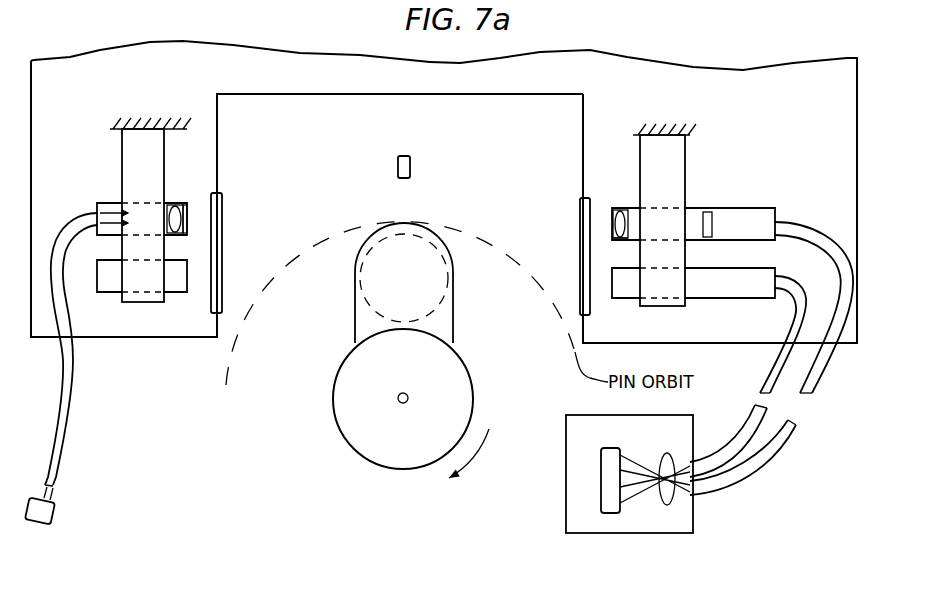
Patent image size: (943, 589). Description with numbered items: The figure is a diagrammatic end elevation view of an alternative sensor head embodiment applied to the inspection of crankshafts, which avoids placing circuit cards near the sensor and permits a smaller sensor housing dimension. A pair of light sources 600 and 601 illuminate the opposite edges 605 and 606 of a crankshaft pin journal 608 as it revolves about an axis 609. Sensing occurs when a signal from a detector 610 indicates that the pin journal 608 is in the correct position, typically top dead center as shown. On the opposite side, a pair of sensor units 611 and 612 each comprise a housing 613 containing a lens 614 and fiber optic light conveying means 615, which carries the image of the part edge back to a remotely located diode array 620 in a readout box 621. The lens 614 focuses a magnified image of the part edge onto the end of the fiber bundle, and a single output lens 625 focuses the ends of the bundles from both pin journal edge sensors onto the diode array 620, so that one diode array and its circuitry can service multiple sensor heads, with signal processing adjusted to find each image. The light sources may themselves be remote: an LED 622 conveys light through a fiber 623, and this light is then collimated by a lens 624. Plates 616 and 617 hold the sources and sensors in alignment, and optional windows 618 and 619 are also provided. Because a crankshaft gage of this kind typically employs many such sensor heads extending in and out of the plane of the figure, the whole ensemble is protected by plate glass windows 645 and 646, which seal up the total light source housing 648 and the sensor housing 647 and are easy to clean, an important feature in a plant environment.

The light source 600 is at (112, 205).
The light source 601 is at (105, 293).
The edge of pin journal 605 is at (405, 223).
The edge of pin journal 606 is at (432, 331).
The crankshaft pin journal 608 is at (382, 263).
The axis 609 is at (399, 402).
The detector 610 is at (411, 165).
The sensor unit 611 is at (626, 240).
The sensor unit 612 is at (625, 298).
The housing 613 is at (752, 208).
The lens 614 is at (628, 218).
The fiber optic light conveying means 615 is at (800, 228).
The plate 616 is at (165, 145).
The plate 617 is at (677, 142).
The window 618 is at (188, 222).
The window 619 is at (620, 208).
The diode array 620 is at (612, 513).
The readout box 621 is at (693, 525).
The LED 622 is at (53, 513).
The fiber 623 is at (78, 216).
The lens 624 is at (172, 205).
The output lens 625 is at (667, 505).
The plate glass window 645 is at (580, 217).
The plate glass window 646 is at (221, 296).
The sensor housing 647 is at (848, 347).
The light source housing 648 is at (181, 338).